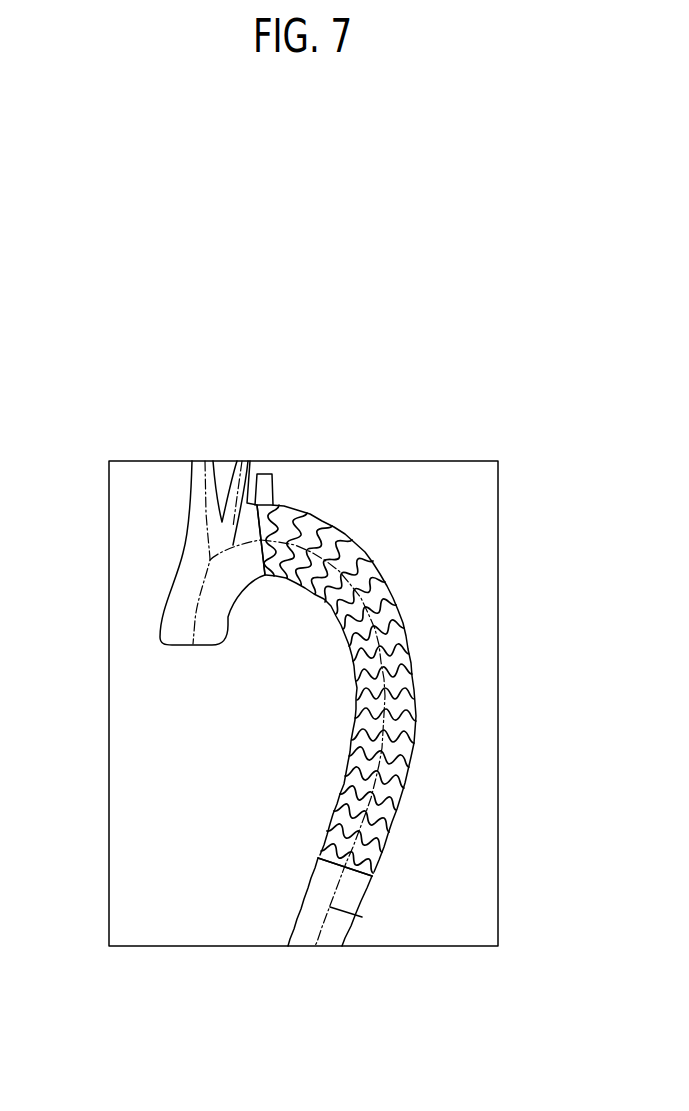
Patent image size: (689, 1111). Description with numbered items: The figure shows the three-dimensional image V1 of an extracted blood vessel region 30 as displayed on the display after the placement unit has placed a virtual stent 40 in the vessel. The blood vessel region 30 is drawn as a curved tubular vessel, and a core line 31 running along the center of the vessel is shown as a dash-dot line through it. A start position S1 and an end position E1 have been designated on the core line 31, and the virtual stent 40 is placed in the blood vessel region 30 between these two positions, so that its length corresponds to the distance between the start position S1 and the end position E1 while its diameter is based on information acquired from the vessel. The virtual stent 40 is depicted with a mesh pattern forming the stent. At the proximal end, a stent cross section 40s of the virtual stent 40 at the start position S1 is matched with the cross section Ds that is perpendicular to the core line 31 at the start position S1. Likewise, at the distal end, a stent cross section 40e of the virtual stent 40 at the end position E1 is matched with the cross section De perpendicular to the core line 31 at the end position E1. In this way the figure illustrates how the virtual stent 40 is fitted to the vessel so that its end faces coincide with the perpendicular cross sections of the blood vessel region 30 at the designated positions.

The three-dimensional image V1 is at (498, 518).
The virtual stent 40 is at (400, 593).
The blood vessel region 30 is at (308, 693).
The core line 31 is at (362, 919).
The end position E1 is at (348, 870).
The start position S1 is at (258, 542).
The stent cross section 40s is at (282, 588).
The cross section Ds is at (256, 542).
The stent cross section 40e is at (285, 868).
The cross section De is at (318, 858).